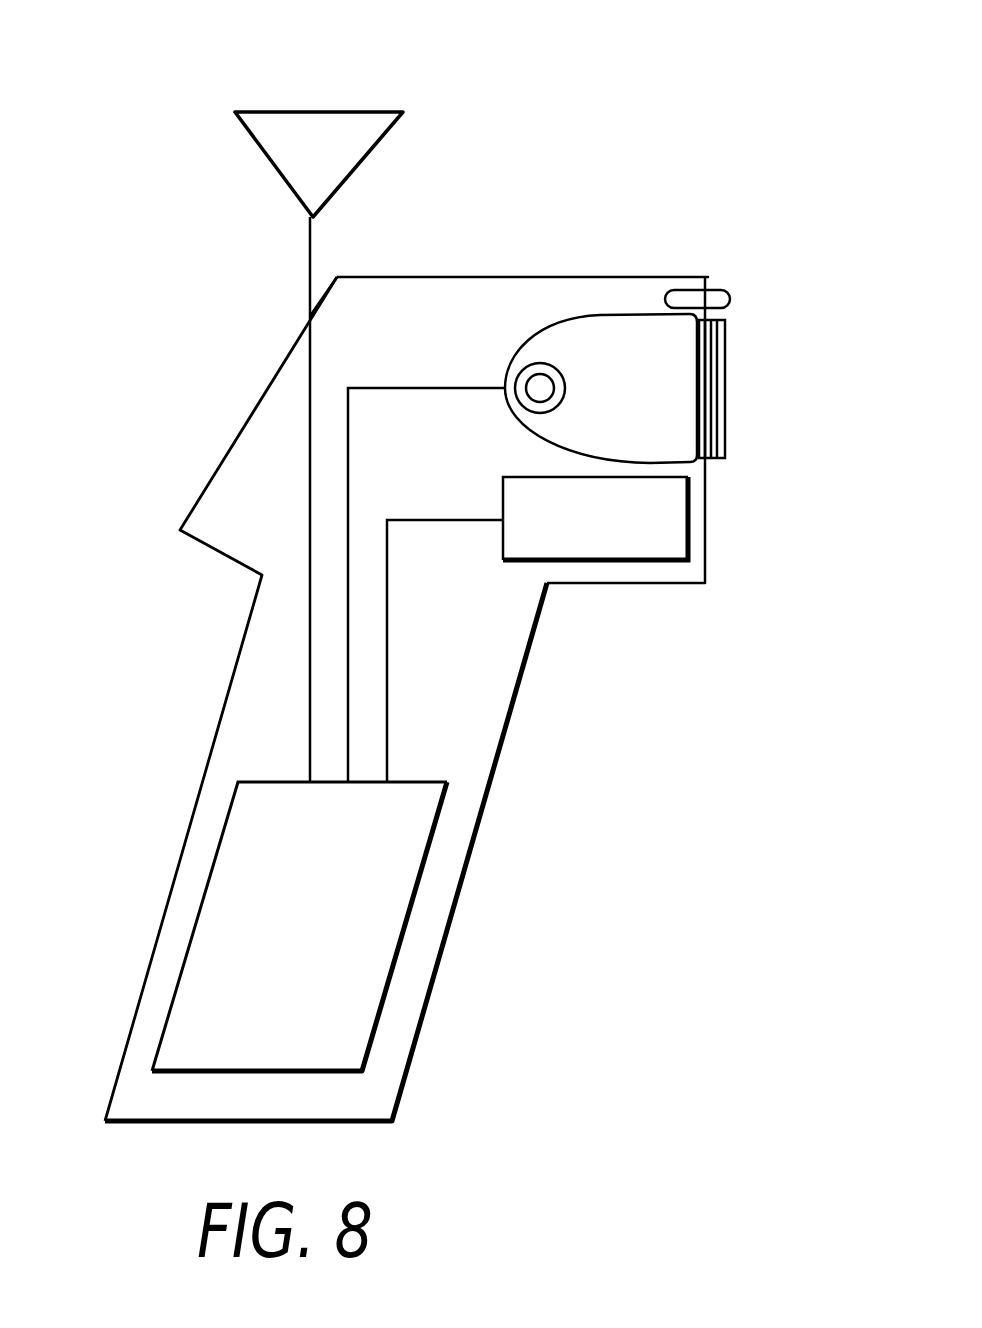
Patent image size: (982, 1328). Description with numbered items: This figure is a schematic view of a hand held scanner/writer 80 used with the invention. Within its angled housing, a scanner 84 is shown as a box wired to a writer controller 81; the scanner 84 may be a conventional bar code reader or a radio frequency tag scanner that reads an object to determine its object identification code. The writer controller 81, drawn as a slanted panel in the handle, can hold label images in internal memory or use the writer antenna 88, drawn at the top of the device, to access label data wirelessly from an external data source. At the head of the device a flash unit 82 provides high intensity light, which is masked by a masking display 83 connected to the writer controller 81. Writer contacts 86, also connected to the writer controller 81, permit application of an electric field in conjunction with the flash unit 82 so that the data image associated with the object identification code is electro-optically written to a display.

The scanner/writer 80 is at (243, 385).
The writer controller 81 is at (210, 878).
The flash unit 82 is at (565, 325).
The masking display 83 is at (730, 348).
The scanner 84 is at (620, 562).
The writer contacts 86 is at (725, 288).
The writer antenna 88 is at (363, 110).